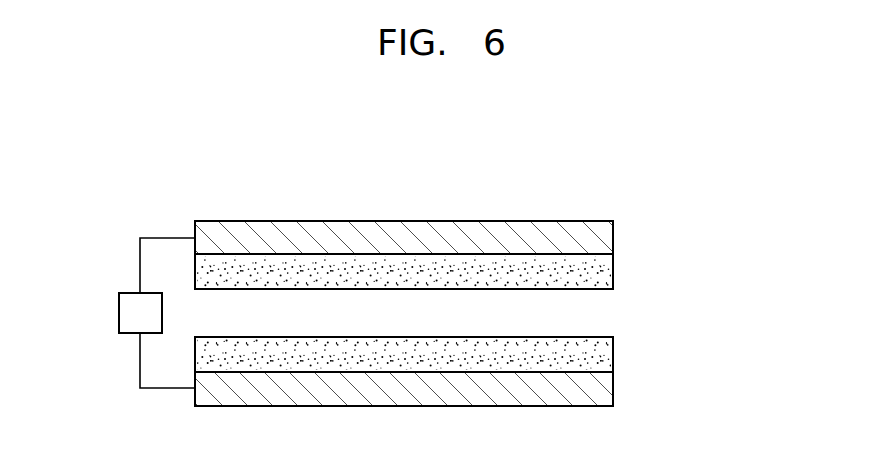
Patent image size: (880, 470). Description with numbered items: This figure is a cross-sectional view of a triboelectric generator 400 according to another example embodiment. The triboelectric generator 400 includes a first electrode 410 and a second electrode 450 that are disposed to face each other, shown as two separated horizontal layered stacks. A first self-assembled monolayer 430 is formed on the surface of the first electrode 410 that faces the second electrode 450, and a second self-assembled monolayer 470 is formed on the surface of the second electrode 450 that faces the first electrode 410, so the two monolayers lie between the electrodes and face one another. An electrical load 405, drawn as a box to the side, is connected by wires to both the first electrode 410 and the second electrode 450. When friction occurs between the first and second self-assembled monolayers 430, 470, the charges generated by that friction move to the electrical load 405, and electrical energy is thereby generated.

The triboelectric generator 400 is at (622, 200).
The electrical load 405 is at (119, 314).
The first electrode 410 is at (613, 389).
The first self-assembled monolayer 430 is at (613, 355).
The second electrode 450 is at (613, 237).
The second self-assembled monolayer 470 is at (613, 272).